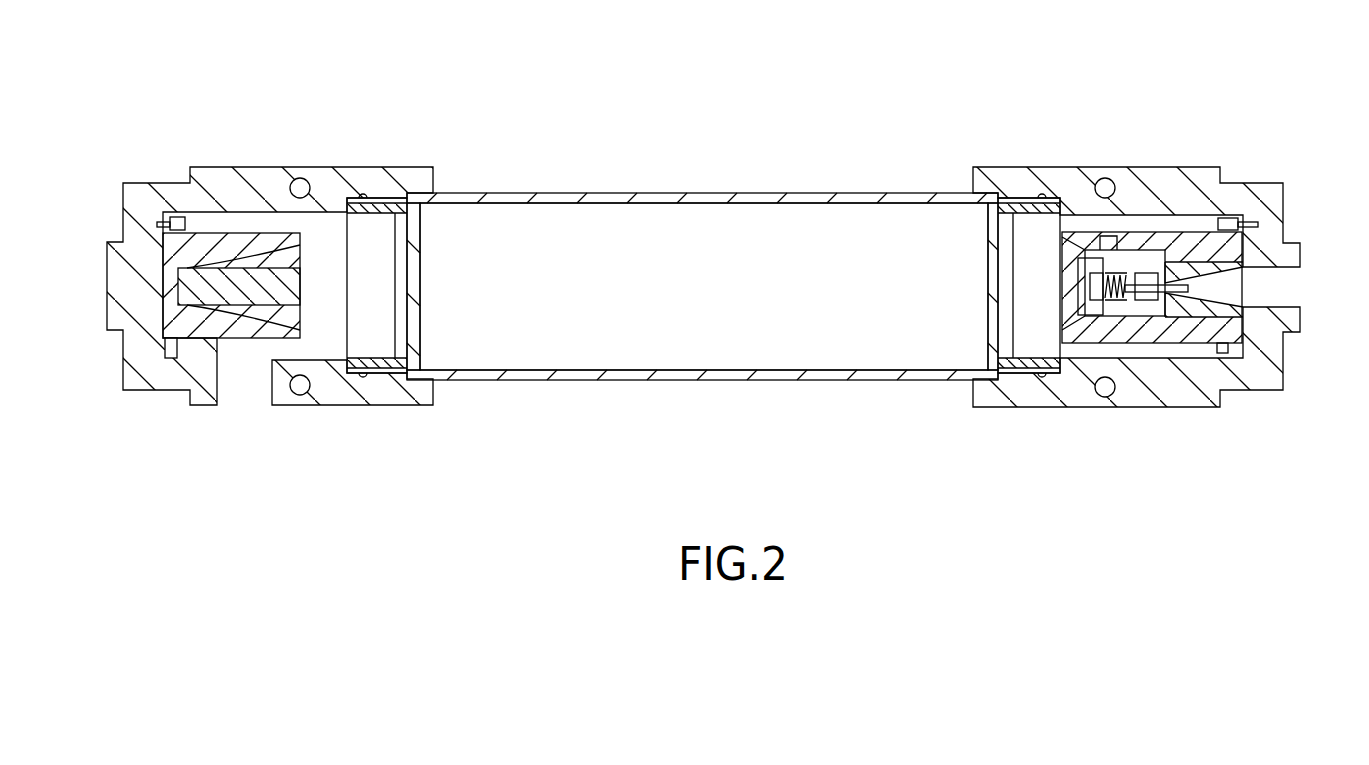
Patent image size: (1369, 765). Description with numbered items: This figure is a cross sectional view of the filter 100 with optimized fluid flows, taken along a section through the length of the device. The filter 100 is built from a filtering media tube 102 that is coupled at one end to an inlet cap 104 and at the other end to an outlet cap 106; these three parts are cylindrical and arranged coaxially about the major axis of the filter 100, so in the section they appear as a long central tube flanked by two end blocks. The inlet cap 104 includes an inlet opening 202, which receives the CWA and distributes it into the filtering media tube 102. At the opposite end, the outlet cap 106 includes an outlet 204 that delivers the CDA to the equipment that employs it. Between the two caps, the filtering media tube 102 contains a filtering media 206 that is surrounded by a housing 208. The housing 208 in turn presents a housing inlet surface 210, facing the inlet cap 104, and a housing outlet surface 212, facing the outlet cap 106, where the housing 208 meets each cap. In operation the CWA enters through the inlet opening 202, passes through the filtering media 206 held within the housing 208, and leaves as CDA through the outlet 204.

The filter 100 is at (1208, 82).
The filtering media tube 102 is at (638, 412).
The inlet cap 104 is at (321, 138).
The outlet cap 106 is at (1125, 133).
The inlet opening 202 is at (244, 441).
The outlet 204 is at (1316, 309).
The filtering media 206 is at (710, 337).
The housing 208 is at (658, 193).
The housing inlet surface 210 is at (407, 175).
The housing outlet surface 212 is at (997, 412).